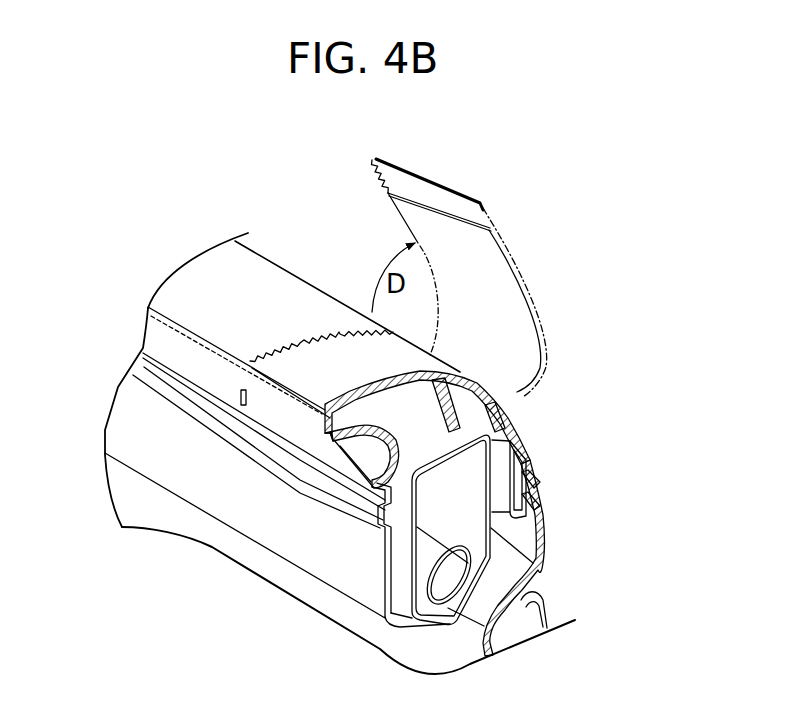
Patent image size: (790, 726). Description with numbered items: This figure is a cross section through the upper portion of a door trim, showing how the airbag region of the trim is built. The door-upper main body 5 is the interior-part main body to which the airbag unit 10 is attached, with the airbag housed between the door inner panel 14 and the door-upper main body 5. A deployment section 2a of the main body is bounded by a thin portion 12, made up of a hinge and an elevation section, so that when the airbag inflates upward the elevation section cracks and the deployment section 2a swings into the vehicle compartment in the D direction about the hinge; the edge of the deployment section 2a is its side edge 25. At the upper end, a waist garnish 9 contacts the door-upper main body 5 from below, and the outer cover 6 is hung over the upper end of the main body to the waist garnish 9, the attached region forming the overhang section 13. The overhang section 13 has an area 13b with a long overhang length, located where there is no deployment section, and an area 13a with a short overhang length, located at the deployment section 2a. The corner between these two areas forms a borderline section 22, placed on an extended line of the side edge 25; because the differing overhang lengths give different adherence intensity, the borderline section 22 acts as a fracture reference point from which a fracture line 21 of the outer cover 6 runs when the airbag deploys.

The deployment section 2a is at (488, 254).
The door-upper main body 5 is at (485, 652).
The door-upper outer cover 6 is at (539, 472).
The waist garnish 9 is at (400, 437).
The airbag unit 10 is at (387, 540).
The thin portion 12 is at (502, 425).
The overhang section 13 is at (333, 423).
The area having a short overhang length 13a is at (302, 413).
The area having a long overhang length 13b is at (213, 377).
The door inner panel 14 is at (388, 577).
The fracture line 21 is at (372, 176).
The borderline section 22 is at (238, 387).
The side edge 25 is at (413, 215).